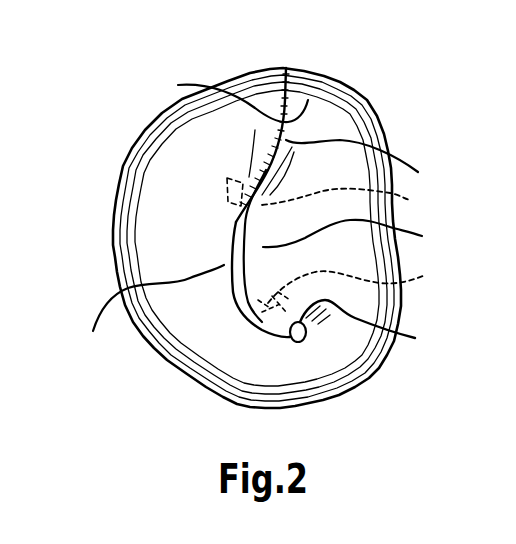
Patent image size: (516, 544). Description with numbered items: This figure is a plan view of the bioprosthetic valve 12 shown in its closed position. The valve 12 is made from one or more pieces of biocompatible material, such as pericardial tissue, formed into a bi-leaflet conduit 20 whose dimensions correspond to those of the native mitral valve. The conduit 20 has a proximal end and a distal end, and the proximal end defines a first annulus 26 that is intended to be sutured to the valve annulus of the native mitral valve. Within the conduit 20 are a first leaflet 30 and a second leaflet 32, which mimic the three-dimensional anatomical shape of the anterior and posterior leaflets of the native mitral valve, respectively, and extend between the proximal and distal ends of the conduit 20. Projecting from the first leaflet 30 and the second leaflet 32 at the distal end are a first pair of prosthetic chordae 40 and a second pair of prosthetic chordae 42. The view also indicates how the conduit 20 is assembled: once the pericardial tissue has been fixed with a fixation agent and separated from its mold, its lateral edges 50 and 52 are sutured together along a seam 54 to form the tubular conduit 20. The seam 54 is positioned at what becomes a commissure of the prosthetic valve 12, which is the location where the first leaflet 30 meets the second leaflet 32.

The bioprosthetic valve 12 is at (382, 110).
The bi-leaflet conduit 20 is at (222, 338).
The first annulus 26 is at (176, 137).
The first leaflet 30 is at (152, 312).
The second leaflet 32 is at (360, 239).
The first pair of prosthetic chordae 40 is at (240, 200).
The second pair of prosthetic chordae 42 is at (360, 244).
The lateral edge 50 is at (224, 98).
The lateral edge 52 is at (308, 100).
The seam 54 is at (369, 165).